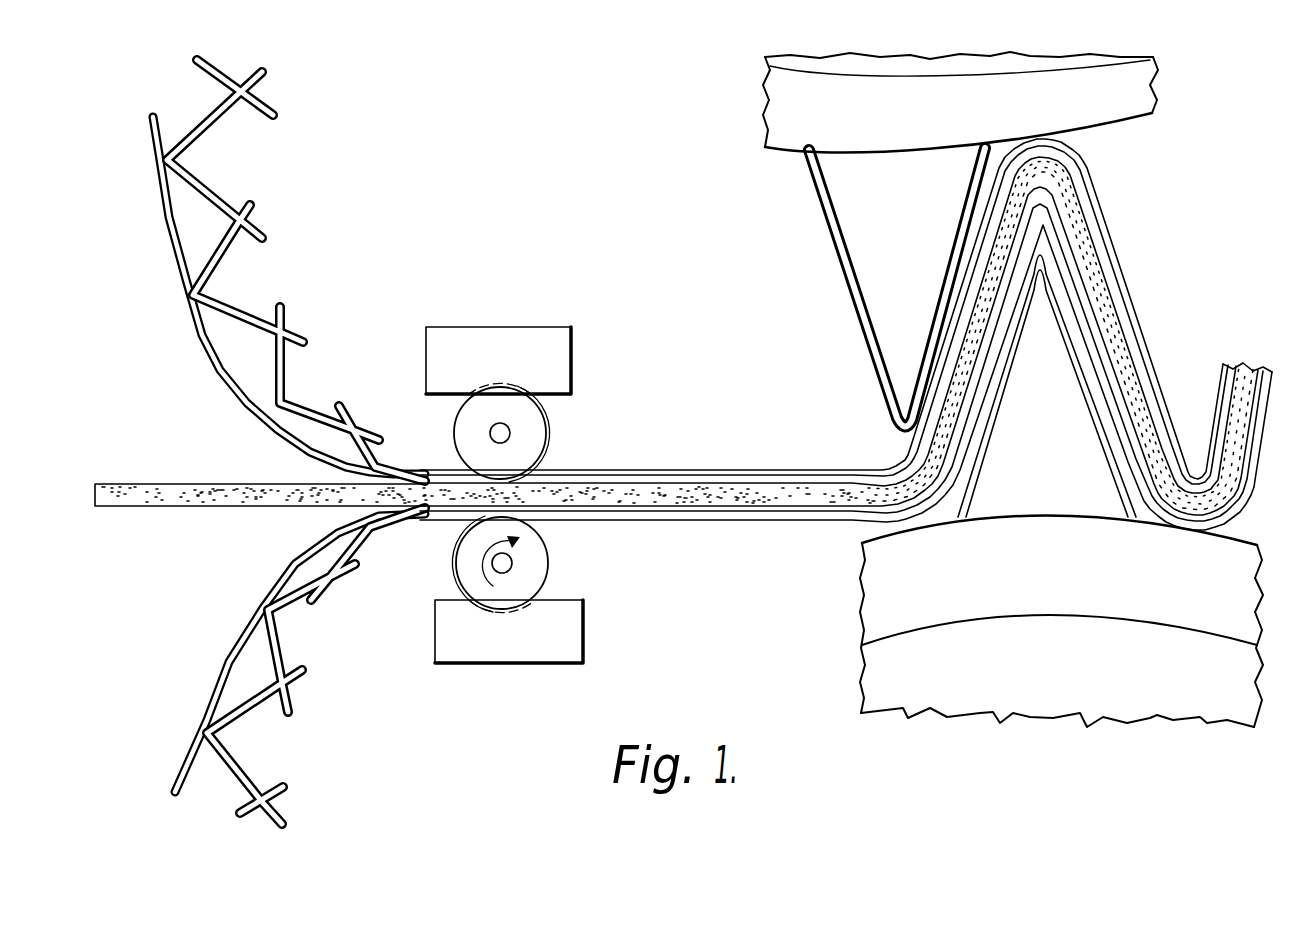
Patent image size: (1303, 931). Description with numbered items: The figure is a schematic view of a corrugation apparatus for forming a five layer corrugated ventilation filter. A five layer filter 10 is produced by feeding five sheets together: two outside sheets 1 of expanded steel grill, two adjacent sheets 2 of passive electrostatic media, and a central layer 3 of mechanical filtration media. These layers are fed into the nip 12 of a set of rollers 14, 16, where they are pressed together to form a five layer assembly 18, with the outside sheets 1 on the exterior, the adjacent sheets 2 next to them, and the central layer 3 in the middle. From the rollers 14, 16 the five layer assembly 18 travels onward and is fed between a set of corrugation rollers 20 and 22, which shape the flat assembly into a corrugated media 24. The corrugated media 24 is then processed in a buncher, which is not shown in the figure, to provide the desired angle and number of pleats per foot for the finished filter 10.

The outside sheets of expanded steel grill 1 is at (262, 222).
The adjacent sheets of passive electrostatic media 2 is at (222, 372).
The central layer of mechanical filtration media 3 is at (193, 500).
The five layer filter 10 is at (1257, 497).
The nip 12 is at (448, 457).
The roller 14 is at (540, 427).
The roller 16 is at (582, 623).
The five layer assembly 18 is at (776, 460).
The corrugation roller 20 is at (744, 88).
The corrugation roller 22 is at (843, 674).
The corrugated media 24 is at (1138, 260).